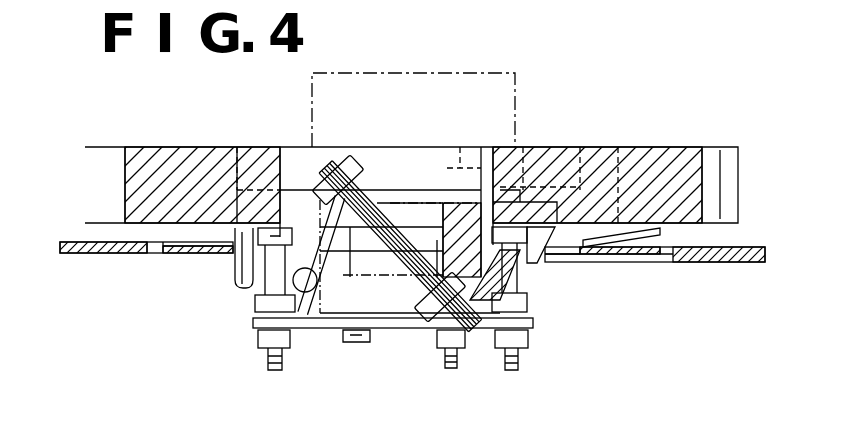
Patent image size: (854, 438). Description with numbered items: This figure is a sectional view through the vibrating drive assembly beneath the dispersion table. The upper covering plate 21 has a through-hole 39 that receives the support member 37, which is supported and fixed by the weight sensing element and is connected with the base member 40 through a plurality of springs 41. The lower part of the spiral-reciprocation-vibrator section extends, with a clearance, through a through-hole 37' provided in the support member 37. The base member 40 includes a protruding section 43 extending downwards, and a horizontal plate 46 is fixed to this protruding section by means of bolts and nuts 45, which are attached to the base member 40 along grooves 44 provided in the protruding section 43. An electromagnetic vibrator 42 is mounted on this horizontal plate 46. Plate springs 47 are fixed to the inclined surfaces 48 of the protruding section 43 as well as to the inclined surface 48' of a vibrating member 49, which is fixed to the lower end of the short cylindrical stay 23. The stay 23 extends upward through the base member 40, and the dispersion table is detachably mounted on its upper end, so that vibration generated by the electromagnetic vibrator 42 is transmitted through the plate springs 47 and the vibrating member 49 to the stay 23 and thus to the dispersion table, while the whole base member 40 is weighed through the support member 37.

The upper covering plate 21 is at (720, 263).
The short cylindrical stay 23 is at (502, 102).
The support member 37 is at (609, 288).
The through-hole 37' is at (165, 278).
The through-hole 39 is at (150, 254).
The base member 40 is at (666, 147).
The springs 41 is at (643, 255).
The electromagnetic vibrator 42 is at (377, 270).
The protruding section 43 is at (245, 268).
The grooves 44 is at (528, 258).
The bolts and nuts 45 is at (253, 340).
The horizontal plate 46 is at (393, 326).
The plate springs 47 is at (313, 187).
The inclined surfaces 48 is at (391, 283).
The inclined surface 48' is at (344, 153).
The vibrating member 49 is at (430, 167).